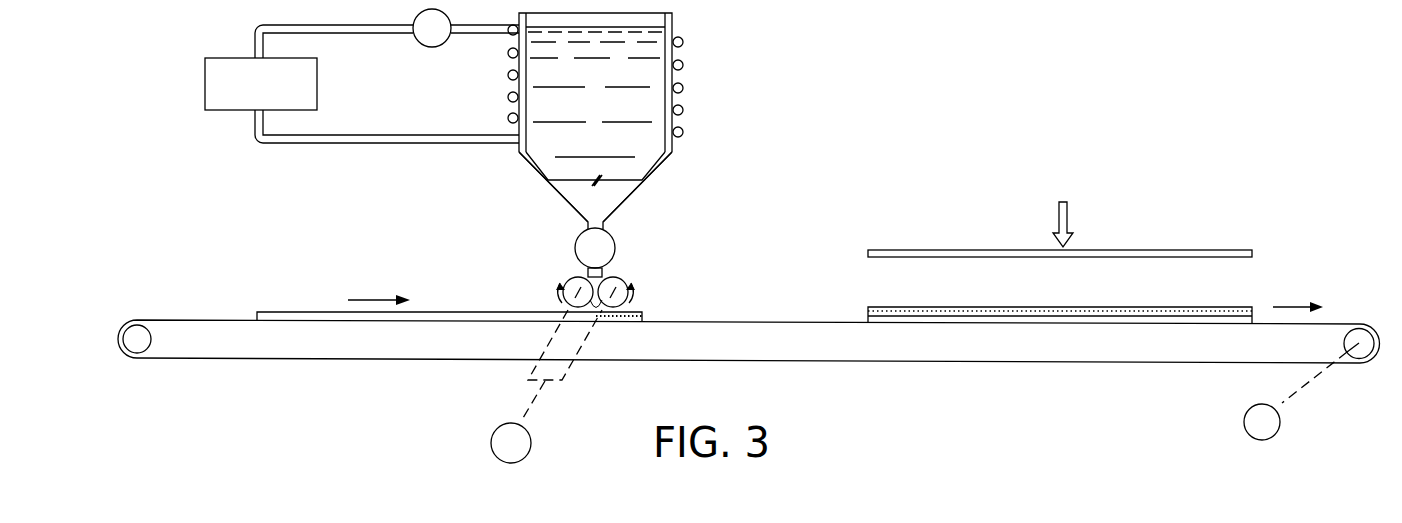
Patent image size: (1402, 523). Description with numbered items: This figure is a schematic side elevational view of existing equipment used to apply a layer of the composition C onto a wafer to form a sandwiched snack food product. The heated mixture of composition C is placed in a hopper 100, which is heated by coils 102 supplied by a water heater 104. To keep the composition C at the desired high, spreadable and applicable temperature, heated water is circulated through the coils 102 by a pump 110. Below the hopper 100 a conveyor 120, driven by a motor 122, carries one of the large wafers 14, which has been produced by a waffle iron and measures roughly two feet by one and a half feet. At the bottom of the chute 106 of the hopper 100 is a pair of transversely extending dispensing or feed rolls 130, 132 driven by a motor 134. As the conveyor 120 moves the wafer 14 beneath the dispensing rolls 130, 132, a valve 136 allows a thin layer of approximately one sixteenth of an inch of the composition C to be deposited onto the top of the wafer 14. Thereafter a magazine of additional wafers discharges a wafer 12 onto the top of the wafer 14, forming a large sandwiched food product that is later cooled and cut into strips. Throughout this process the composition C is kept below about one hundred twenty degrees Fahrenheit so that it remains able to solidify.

The wafer 12 is at (980, 250).
The wafer 14 is at (318, 311).
The hopper 100 is at (668, 121).
The coils 102 is at (684, 88).
The water heater 104 is at (223, 111).
The chute 106 is at (640, 188).
The pump 110 is at (422, 47).
The conveyor 120 is at (755, 322).
The motor 122 is at (1280, 425).
The dispensing roll 130 is at (558, 287).
The dispensing roll 132 is at (633, 278).
The motor 134 is at (490, 440).
The valve 136 is at (578, 236).
The composition C is at (664, 52).